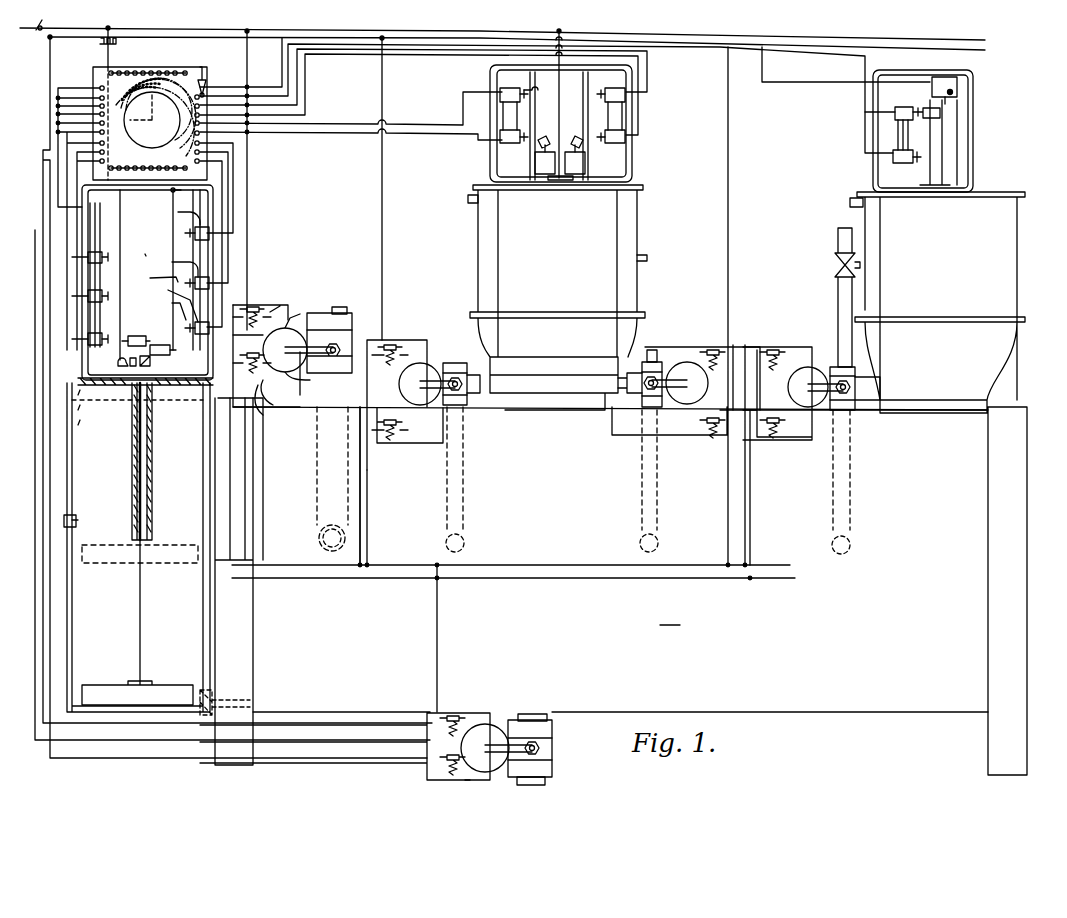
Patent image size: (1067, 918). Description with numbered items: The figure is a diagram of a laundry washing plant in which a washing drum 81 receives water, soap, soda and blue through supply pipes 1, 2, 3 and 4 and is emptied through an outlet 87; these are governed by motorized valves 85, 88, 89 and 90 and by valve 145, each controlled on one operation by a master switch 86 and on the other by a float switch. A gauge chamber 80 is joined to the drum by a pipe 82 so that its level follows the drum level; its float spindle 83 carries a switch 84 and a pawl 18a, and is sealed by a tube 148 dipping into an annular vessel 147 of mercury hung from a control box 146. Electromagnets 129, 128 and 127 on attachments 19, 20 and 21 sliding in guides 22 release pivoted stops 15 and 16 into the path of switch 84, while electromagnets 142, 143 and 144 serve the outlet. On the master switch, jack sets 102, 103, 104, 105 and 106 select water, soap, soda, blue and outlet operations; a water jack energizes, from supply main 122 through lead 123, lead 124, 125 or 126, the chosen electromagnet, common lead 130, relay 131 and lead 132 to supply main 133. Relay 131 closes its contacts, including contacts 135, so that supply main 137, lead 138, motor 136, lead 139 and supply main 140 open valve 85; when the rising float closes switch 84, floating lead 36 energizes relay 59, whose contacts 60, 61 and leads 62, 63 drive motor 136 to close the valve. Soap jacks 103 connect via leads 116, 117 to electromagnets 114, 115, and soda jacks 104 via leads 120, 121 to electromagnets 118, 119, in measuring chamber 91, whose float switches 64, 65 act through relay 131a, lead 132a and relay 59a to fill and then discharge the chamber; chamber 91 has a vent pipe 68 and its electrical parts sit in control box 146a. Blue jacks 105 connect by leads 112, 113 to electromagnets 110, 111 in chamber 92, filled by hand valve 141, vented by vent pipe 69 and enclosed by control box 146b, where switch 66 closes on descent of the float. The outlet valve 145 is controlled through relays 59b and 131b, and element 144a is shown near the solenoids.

The supply pipe 1 is at (313, 385).
The supply pipe 2 is at (465, 450).
The supply pipe 3 is at (658, 470).
The supply pipe 4 is at (852, 460).
The pivoted stop or trigger device 15 is at (169, 307).
The pivoted stop or trigger device 16 is at (151, 274).
The pawl 18a is at (116, 364).
The attachment 19 is at (174, 301).
The attachment 20 is at (175, 265).
The attachment 21 is at (176, 212).
The guides 22 is at (166, 192).
The floating lead 36 is at (213, 393).
The relay 59 is at (310, 380).
The relay 59a is at (395, 446).
The relay 59b is at (468, 782).
The contacts 60 is at (253, 376).
The contacts 61 is at (262, 395).
The lead 62 is at (275, 405).
The lead 63 is at (265, 415).
The float switch 64 is at (541, 138).
The float switch 65 is at (578, 136).
The float switch 66 is at (957, 92).
The vent pipe 68 is at (468, 203).
The vent pipe 69 is at (850, 202).
The gauge chamber 80 is at (130, 574).
The washing drum 81 is at (670, 617).
The pipe 82 is at (212, 696).
The float spindle 83 is at (142, 604).
The switch 84 is at (160, 343).
The motorized valve 85 is at (348, 312).
The master switch 86 is at (143, 200).
The outlet 87 is at (548, 722).
The motorized valve 88 is at (440, 356).
The motorized valve 89 is at (667, 346).
The motorized valve 90 is at (830, 360).
The measuring chamber 91 is at (637, 242).
The measuring chamber 92 is at (1037, 262).
The set of jacks 102 is at (196, 155).
The set of jacks 103 is at (196, 126).
The set of jacks 104 is at (180, 110).
The set of jacks 105 is at (206, 78).
The set of jacks 106 is at (100, 86).
The electromagnet 110 is at (908, 106).
The electromagnet 111 is at (907, 165).
The lead 112 is at (230, 86).
The lead 113 is at (264, 94).
The electromagnet 114 is at (520, 93).
The electromagnet 115 is at (514, 144).
The lead 116 is at (437, 118).
The lead 117 is at (405, 134).
The electromagnet 118 is at (620, 92).
The electromagnet 119 is at (605, 144).
The lead 120 is at (306, 105).
The lead 121 is at (298, 88).
The supply main 122 is at (40, 32).
The lead 123 is at (118, 47).
The lead 124 is at (234, 168).
The lead 125 is at (229, 190).
The lead 126 is at (223, 210).
The electromagnet 127 is at (210, 233).
The electromagnet 128 is at (210, 283).
The electromagnet 129 is at (198, 335).
The common lead 130 is at (205, 355).
The relay 131 is at (280, 304).
The relay 131a is at (392, 350).
The relay 131b is at (462, 720).
The lead 132 is at (248, 64).
The lead 132a is at (381, 240).
The supply main 133 is at (68, 35).
The contacts 135 is at (262, 300).
The motor 136 is at (320, 330).
The supply main 137 is at (575, 566).
The lead 138 is at (270, 360).
The lead 139 is at (290, 314).
The supply main 140 is at (508, 577).
The hand-operated valve 141 is at (838, 266).
The electromagnet 142 is at (86, 256).
The electromagnet 143 is at (86, 295).
The electromagnet 144 is at (86, 338).
The contact 144a is at (548, 85).
The motorized valve 145 is at (522, 784).
The electrical control box 146 is at (144, 282).
The control box 146a is at (573, 105).
The control box 146b is at (889, 119).
The annular vessel 147 is at (152, 495).
The tube or cylinder 148 is at (152, 420).